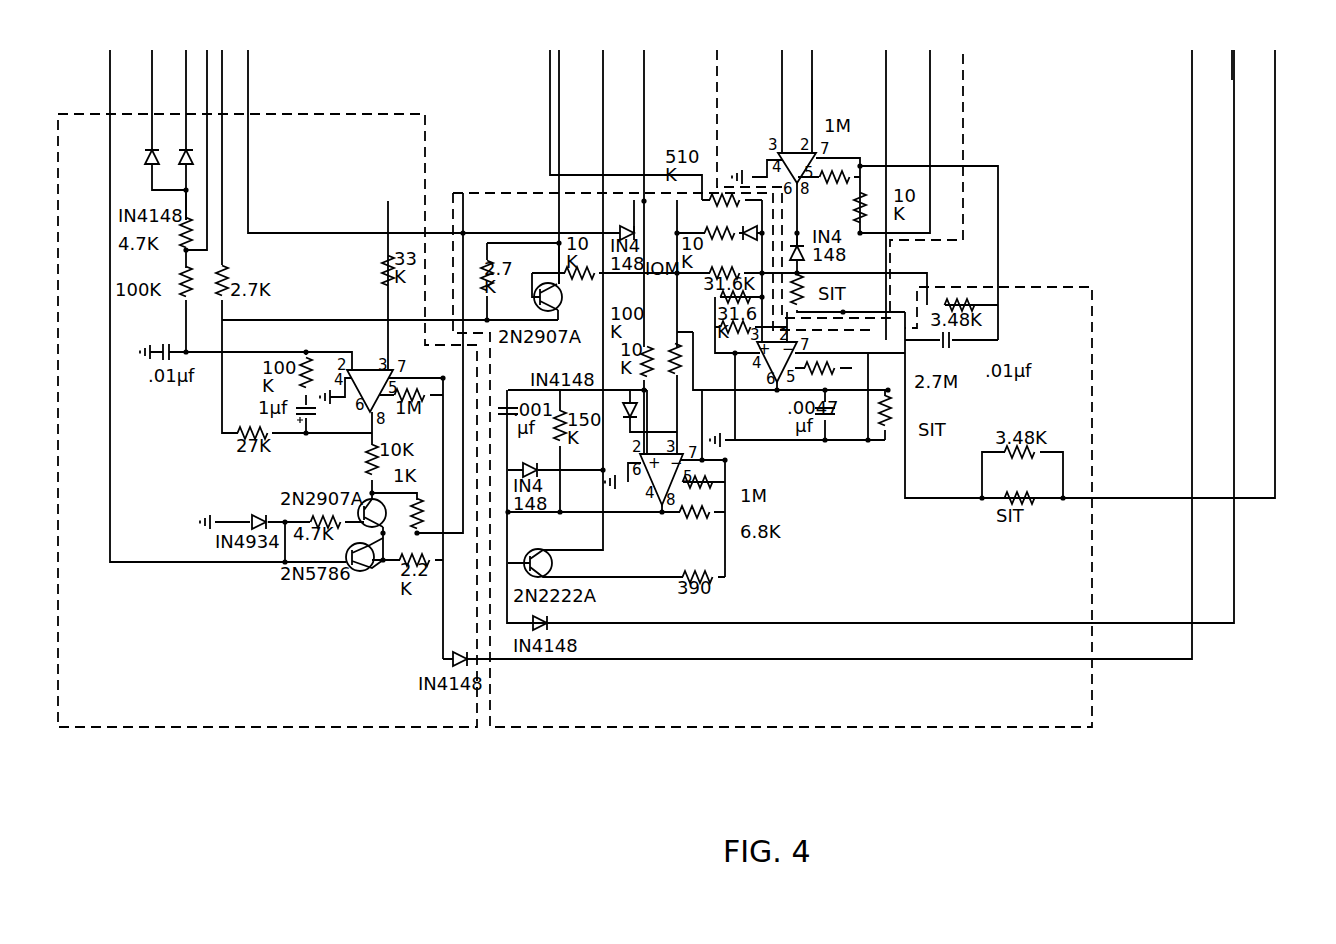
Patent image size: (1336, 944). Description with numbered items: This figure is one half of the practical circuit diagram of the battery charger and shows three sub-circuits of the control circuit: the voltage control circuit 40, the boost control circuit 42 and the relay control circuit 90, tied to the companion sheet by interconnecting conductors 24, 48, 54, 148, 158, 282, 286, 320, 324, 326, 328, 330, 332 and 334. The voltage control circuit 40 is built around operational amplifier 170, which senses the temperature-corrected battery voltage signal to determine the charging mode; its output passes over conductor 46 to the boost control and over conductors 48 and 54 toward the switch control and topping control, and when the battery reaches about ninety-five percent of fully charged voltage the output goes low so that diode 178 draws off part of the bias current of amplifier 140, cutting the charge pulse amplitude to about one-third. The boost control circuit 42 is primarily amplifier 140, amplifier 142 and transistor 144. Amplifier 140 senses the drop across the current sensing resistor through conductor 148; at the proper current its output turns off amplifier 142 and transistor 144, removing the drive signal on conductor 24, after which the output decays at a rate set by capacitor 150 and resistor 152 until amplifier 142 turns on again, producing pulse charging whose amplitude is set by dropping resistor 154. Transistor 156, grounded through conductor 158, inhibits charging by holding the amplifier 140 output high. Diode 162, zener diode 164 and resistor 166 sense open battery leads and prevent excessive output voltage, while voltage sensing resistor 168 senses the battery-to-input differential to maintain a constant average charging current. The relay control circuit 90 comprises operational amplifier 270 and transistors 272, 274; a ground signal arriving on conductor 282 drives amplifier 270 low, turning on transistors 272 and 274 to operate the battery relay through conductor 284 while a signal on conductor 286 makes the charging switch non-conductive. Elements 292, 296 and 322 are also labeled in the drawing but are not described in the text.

The conductor 24 is at (597, 148).
The voltage control circuit 40 is at (717, 140).
The boost control circuit 42 is at (916, 727).
The conductor 46 is at (800, 209).
The conductor 48 is at (862, 78).
The conductor 54 is at (930, 143).
The relay control circuit 90 is at (322, 727).
The amplifier 140 is at (754, 380).
The amplifier 142 is at (664, 506).
The transistor 144 is at (552, 568).
The conductor 148 is at (1275, 400).
The capacitor 150 is at (830, 412).
The resistor 152 is at (893, 408).
The dropping resistor 154 is at (1034, 506).
The transistor 156 is at (556, 305).
The conductor 158 is at (223, 200).
The diode 162 is at (626, 229).
The zener diode 164 is at (754, 232).
The resistor 166 is at (730, 230).
The voltage sensing resistor 168 is at (726, 194).
The operational amplifier 170 is at (776, 151).
The diode 178 is at (863, 267).
The operational amplifier 270 is at (364, 353).
The transistor 272 is at (364, 498).
The transistor 274 is at (364, 584).
The conductor 282 is at (207, 106).
The conductor 284 is at (110, 310).
The conductor 286 is at (442, 650).
The diode IN4148 292 is at (153, 77).
The diode IN4148 296 is at (186, 77).
The conductor 320 is at (248, 66).
The line 322 is at (550, 78).
The conductor 324 is at (559, 93).
The conductor 326 is at (643, 75).
The conductor 328 is at (782, 78).
The conductor 330 is at (812, 110).
The conductor 332 is at (885, 76).
The conductor 334 is at (1231, 90).